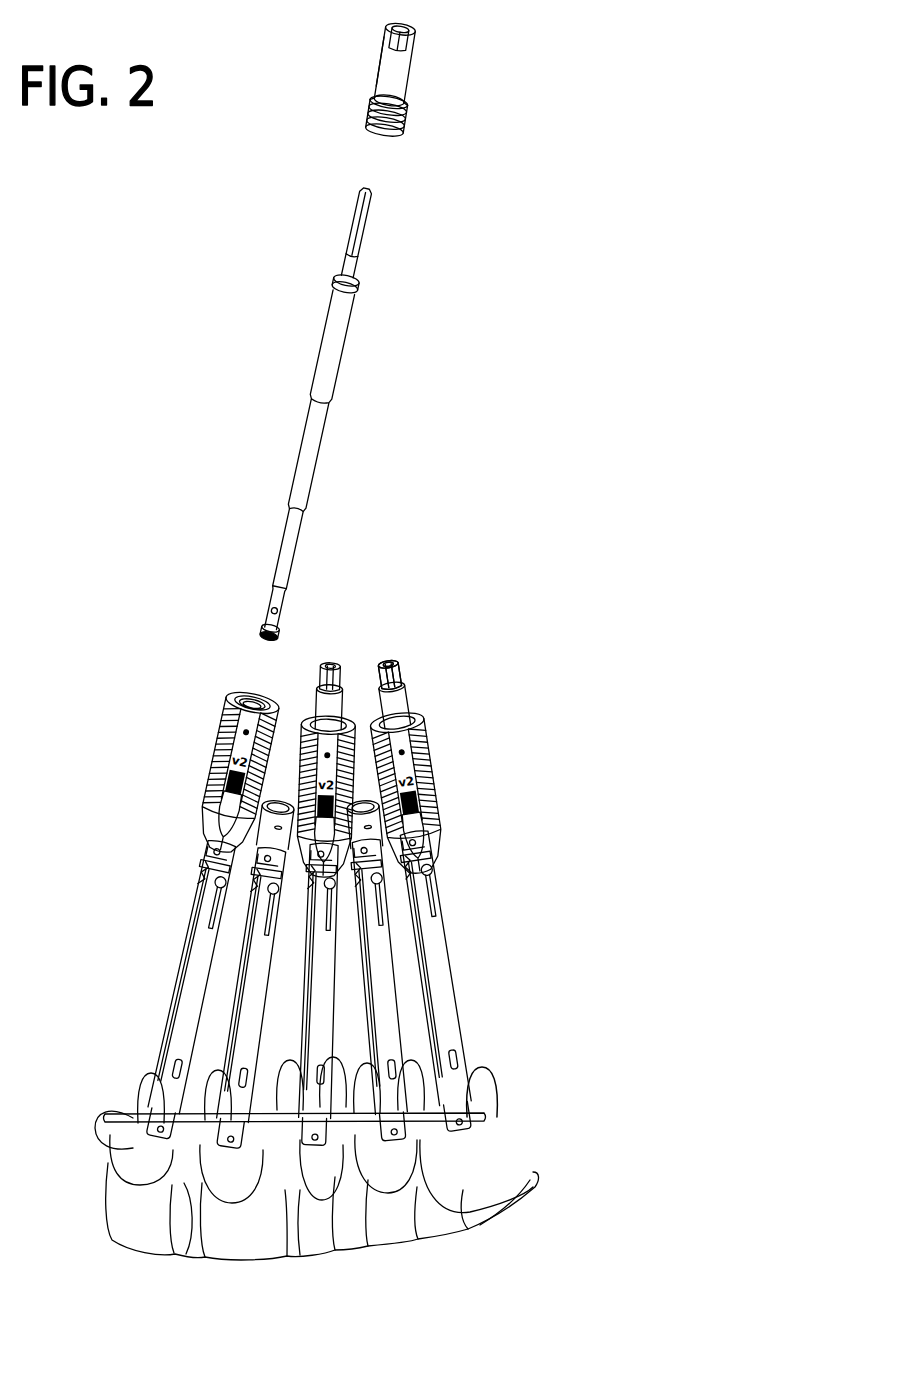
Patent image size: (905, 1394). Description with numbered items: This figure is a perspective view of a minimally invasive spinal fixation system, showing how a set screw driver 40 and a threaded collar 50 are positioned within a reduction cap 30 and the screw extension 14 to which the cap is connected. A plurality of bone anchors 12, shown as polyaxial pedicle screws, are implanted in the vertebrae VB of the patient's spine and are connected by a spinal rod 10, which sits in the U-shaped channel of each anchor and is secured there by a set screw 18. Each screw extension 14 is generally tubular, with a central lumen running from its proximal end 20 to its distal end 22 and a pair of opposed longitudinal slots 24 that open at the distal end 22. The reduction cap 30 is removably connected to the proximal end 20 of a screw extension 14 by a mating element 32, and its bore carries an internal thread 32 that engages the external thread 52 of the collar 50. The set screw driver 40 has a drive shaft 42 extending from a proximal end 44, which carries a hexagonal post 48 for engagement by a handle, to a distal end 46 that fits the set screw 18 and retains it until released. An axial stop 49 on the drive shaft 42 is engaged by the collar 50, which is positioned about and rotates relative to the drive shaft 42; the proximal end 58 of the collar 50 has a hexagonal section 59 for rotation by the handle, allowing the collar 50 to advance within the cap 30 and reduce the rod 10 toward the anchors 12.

The spinal rod 10 is at (423, 1113).
The bone anchor 12 is at (200, 1166).
The screw extension 14 is at (253, 1028).
The set screw 18 is at (269, 632).
The proximal end of the screw extension 20 is at (203, 865).
The distal end of the screw extension 22 is at (173, 1078).
The longitudinal slots 24 is at (177, 978).
The reduction cap 30 is at (237, 743).
The internal thread / mating element 32 is at (243, 693).
The set screw driver 40 is at (356, 443).
The drive shaft 42 is at (320, 401).
The proximal end of the set screw driver 44 is at (349, 266).
The distal end of the set screw driver 46 is at (284, 568).
The hexagonal post 48 is at (357, 215).
The axial stop 49 is at (345, 284).
The threaded collar 50 is at (432, 75).
The external thread 52 is at (403, 113).
The proximal end of the threaded collar 58 is at (364, 43).
The hexagonal section 59 is at (412, 38).
The vertebra VB is at (510, 1195).